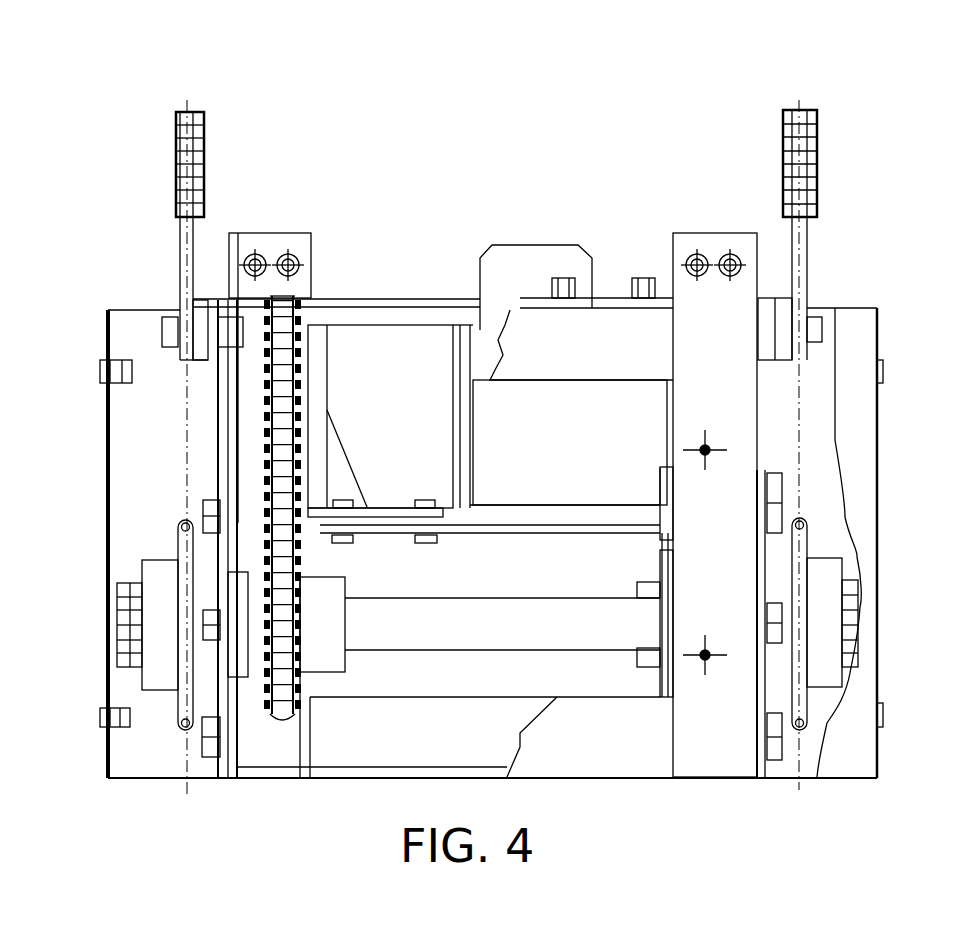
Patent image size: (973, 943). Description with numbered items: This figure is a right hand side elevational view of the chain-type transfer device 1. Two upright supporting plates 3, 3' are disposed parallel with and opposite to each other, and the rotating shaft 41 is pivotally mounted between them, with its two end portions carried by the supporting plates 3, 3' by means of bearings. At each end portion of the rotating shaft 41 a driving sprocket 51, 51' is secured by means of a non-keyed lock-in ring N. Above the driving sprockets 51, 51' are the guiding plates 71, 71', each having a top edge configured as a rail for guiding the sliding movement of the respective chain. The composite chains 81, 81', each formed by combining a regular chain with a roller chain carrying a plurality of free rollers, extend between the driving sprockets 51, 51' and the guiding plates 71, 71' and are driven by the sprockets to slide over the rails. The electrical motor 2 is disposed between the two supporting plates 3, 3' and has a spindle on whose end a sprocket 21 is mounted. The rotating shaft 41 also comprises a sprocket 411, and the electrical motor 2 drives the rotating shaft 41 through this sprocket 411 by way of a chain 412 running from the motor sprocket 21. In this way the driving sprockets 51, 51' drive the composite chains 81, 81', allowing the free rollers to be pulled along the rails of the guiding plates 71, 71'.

The chain-type transfer device 1 is at (447, 95).
The electrical motor 2 is at (487, 345).
The upright supporting plate 3 is at (235, 568).
The upright supporting plate 3' is at (780, 651).
The sprocket 21 is at (300, 378).
The rotating shaft 41 is at (492, 613).
The sprocket 411 is at (300, 605).
The chain 412 is at (300, 488).
The driving sprocket 51 is at (143, 669).
The driving sprocket 51' is at (869, 639).
The guiding plate 71 is at (155, 447).
The guiding plate 71' is at (844, 445).
The composite chain 81 is at (225, 133).
The composite chain 81' is at (835, 133).
The non-keyed lock-in ring N is at (140, 597).